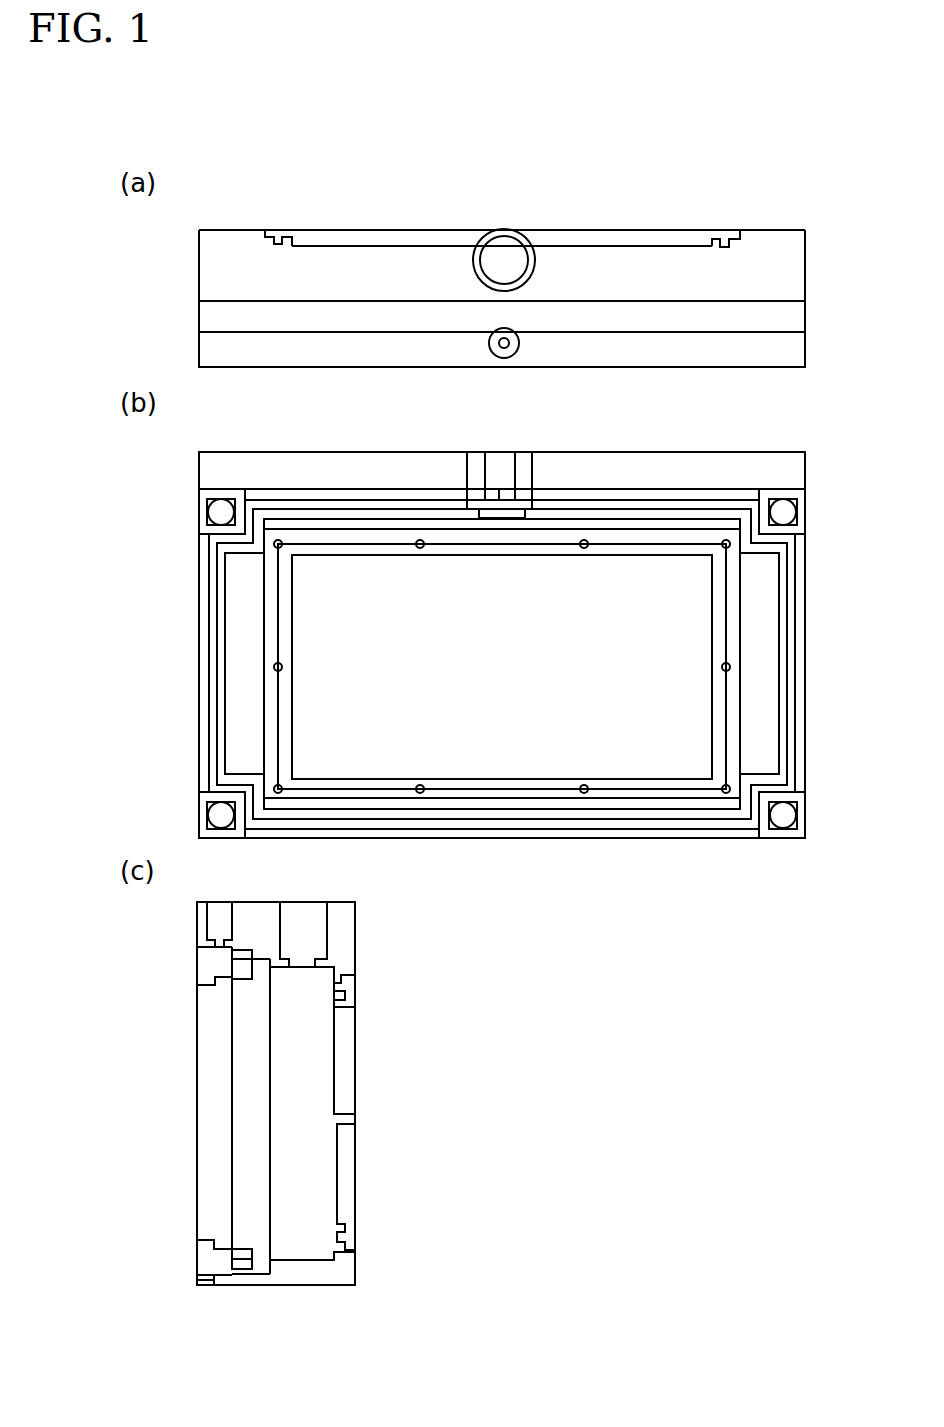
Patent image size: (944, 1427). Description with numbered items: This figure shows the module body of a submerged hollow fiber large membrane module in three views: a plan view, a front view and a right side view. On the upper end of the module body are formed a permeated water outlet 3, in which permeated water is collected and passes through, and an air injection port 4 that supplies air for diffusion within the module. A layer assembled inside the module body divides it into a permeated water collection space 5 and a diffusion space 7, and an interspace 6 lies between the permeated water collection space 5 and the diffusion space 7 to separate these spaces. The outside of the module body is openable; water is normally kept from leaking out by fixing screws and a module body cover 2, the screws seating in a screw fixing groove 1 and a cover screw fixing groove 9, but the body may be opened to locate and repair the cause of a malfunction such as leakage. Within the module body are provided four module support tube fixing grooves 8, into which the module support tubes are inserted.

The screw fixing groove 1 is at (285, 226).
The module body cover 2 is at (373, 235).
The permeated water outlet 3 is at (505, 255).
The air injection port 4 is at (510, 332).
The permeated water collection space 5 is at (730, 263).
The interspace 6 is at (730, 312).
The diffusion space 7 is at (730, 357).
The module support tube fixing groove 8 is at (213, 505).
The cover screw fixing groove 9 is at (270, 669).